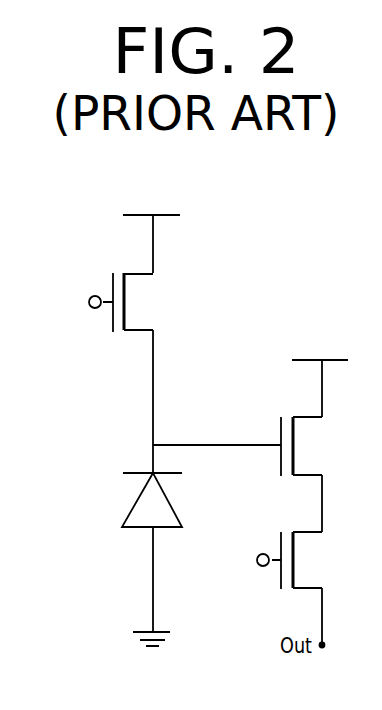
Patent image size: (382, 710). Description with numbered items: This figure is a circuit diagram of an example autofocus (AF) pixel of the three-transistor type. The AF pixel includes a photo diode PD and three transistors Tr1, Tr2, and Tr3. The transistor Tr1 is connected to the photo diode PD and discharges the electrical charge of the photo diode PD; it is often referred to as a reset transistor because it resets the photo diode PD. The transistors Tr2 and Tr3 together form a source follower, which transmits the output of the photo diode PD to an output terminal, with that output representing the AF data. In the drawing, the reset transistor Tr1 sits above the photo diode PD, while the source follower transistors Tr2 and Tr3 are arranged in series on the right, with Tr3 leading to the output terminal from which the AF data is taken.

The reset transistor Tr1 is at (128, 302).
The source follower transistor Tr2 is at (297, 446).
The source follower transistor Tr3 is at (297, 560).
The photodiode PD is at (166, 500).